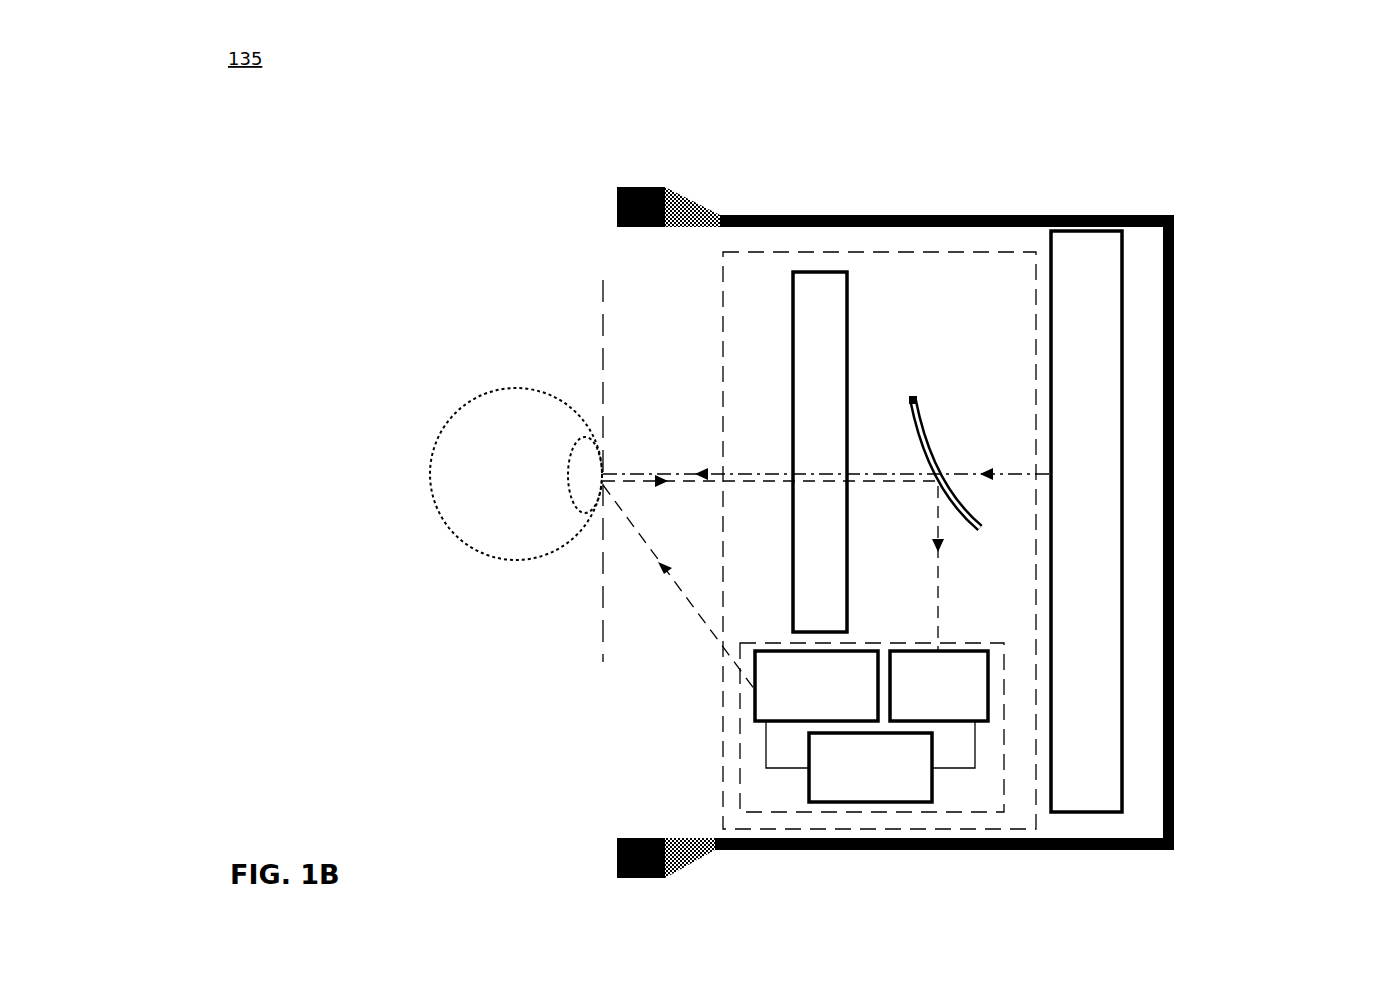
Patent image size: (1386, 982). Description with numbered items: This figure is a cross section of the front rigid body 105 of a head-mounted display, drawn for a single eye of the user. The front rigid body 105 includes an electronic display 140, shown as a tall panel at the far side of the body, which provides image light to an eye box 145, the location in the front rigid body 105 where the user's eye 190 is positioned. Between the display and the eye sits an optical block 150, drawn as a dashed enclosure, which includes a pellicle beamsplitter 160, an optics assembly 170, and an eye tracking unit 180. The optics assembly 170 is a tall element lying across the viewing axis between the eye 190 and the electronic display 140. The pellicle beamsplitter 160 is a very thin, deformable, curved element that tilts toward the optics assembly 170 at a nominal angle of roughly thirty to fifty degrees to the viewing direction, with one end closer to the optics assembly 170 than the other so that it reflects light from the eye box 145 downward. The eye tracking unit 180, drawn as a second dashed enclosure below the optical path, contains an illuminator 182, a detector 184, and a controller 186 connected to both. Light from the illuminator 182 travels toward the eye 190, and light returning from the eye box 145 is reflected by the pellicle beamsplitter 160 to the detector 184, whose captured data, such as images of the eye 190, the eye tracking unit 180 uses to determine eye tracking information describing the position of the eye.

The front rigid body 105 is at (1182, 485).
The electronic display 140 is at (1123, 268).
The eye box 145 is at (598, 600).
The optical block 150 is at (728, 250).
The pellicle beamsplitter 160 is at (935, 425).
The optics assembly 170 is at (820, 272).
The eye tracking unit 180 is at (758, 727).
The illuminator 182 is at (816, 686).
The detector 184 is at (939, 686).
The controller 186 is at (870, 767).
The eye 190 is at (516, 474).